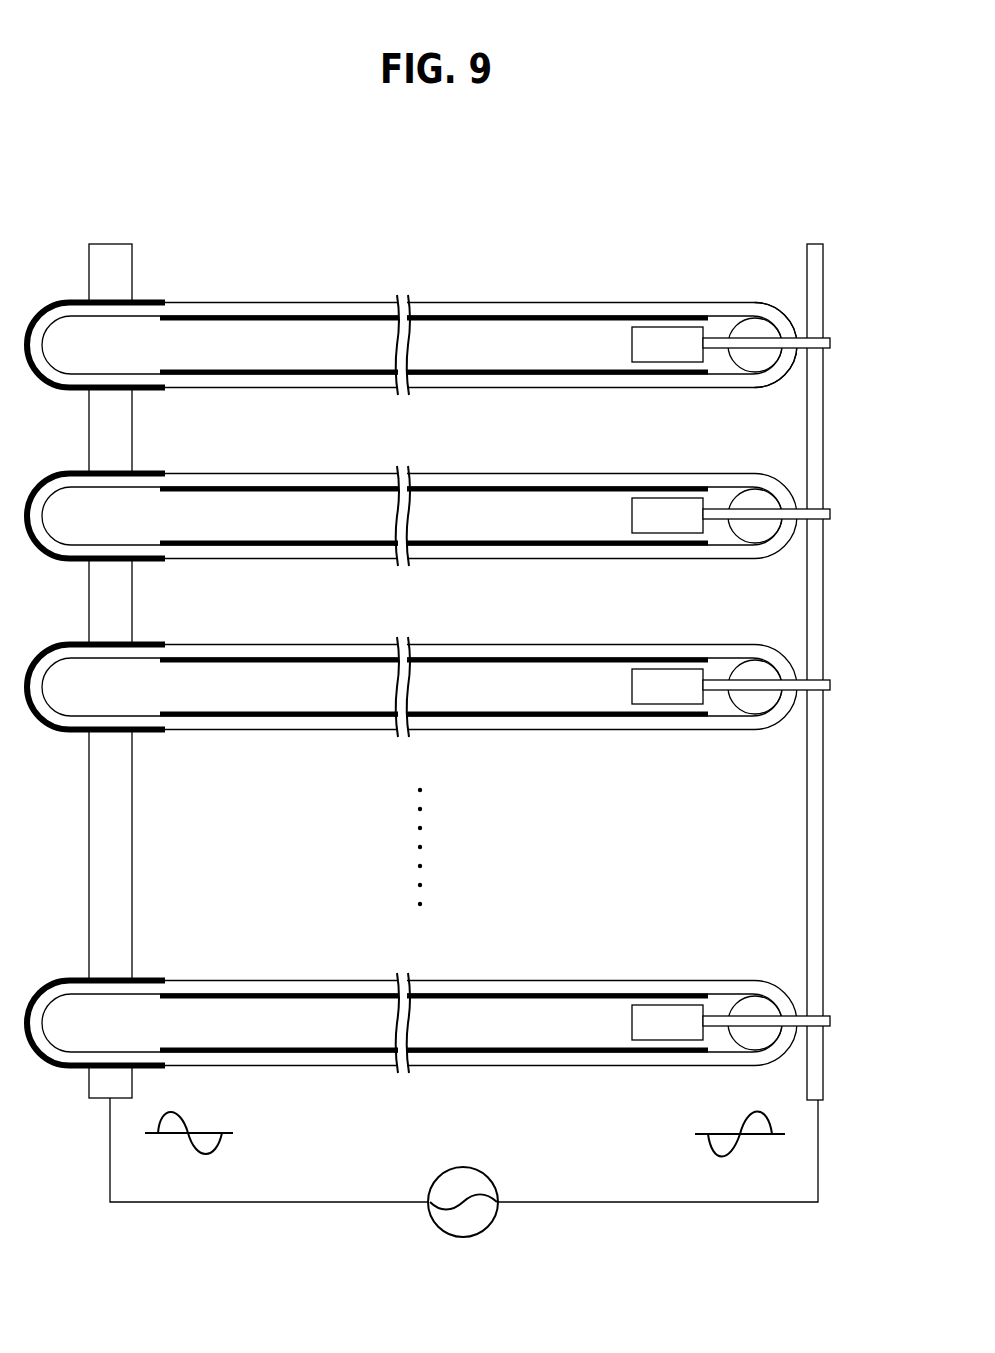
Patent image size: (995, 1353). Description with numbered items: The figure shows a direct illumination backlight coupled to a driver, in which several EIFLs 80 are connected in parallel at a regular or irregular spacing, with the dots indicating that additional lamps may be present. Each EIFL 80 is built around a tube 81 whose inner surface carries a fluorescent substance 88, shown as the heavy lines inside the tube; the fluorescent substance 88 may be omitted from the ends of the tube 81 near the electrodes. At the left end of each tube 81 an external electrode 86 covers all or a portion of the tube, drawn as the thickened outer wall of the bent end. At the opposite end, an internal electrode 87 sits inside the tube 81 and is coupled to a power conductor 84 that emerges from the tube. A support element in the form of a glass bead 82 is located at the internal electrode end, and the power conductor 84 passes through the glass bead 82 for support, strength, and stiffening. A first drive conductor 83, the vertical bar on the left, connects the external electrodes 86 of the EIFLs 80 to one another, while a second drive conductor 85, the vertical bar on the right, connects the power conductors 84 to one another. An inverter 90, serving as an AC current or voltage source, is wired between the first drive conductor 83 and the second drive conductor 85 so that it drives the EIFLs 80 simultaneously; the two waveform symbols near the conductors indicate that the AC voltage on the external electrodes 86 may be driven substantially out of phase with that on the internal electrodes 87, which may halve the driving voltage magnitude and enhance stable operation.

The EIFL 80 is at (458, 642).
The tube 81 is at (428, 344).
The glass bead 82 is at (750, 327).
The first drive conductor 83 is at (112, 252).
The power conductor 84 is at (801, 352).
The second drive conductor 85 is at (815, 445).
The external electrode 86 is at (150, 300).
The internal electrode 87 is at (668, 355).
The fluorescent substance 88 is at (318, 366).
The inverter 90 is at (485, 1217).